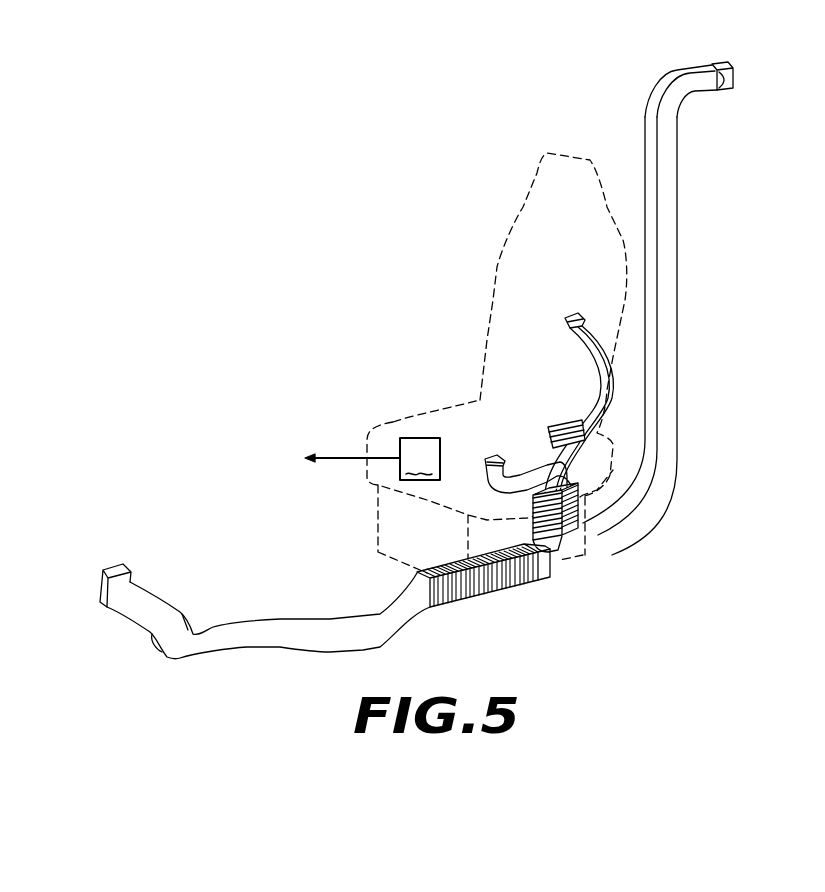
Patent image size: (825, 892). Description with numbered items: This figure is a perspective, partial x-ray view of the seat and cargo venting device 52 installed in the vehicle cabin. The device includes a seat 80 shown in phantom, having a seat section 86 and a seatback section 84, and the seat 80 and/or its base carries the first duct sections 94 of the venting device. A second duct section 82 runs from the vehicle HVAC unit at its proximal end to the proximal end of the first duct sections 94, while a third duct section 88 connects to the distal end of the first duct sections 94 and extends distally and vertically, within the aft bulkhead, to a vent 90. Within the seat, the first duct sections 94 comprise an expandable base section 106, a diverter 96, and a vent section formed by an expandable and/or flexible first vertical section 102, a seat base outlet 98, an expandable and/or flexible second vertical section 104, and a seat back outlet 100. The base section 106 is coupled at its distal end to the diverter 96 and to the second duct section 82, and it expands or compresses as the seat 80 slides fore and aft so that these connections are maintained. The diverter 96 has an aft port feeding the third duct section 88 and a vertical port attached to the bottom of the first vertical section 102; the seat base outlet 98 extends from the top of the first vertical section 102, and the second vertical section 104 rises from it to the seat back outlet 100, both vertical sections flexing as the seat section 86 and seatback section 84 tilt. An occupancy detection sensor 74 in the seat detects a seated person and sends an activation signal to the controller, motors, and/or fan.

The seat and cargo venting device 52 is at (269, 290).
The occupancy detection sensor 74 is at (266, 457).
The seat 80 is at (410, 358).
The second duct section 82 is at (283, 618).
The seatback section 84 is at (495, 268).
The seat section 86 is at (393, 422).
The third duct section 88 is at (668, 320).
The vent 90 is at (740, 80).
The first duct sections 94 is at (509, 379).
The diverter 96 is at (557, 565).
The seat base outlet 98 is at (488, 460).
The seat back outlet 100 is at (565, 320).
The first vertical section 102 is at (572, 523).
The second vertical section 104 is at (550, 428).
The base section 106 is at (460, 595).